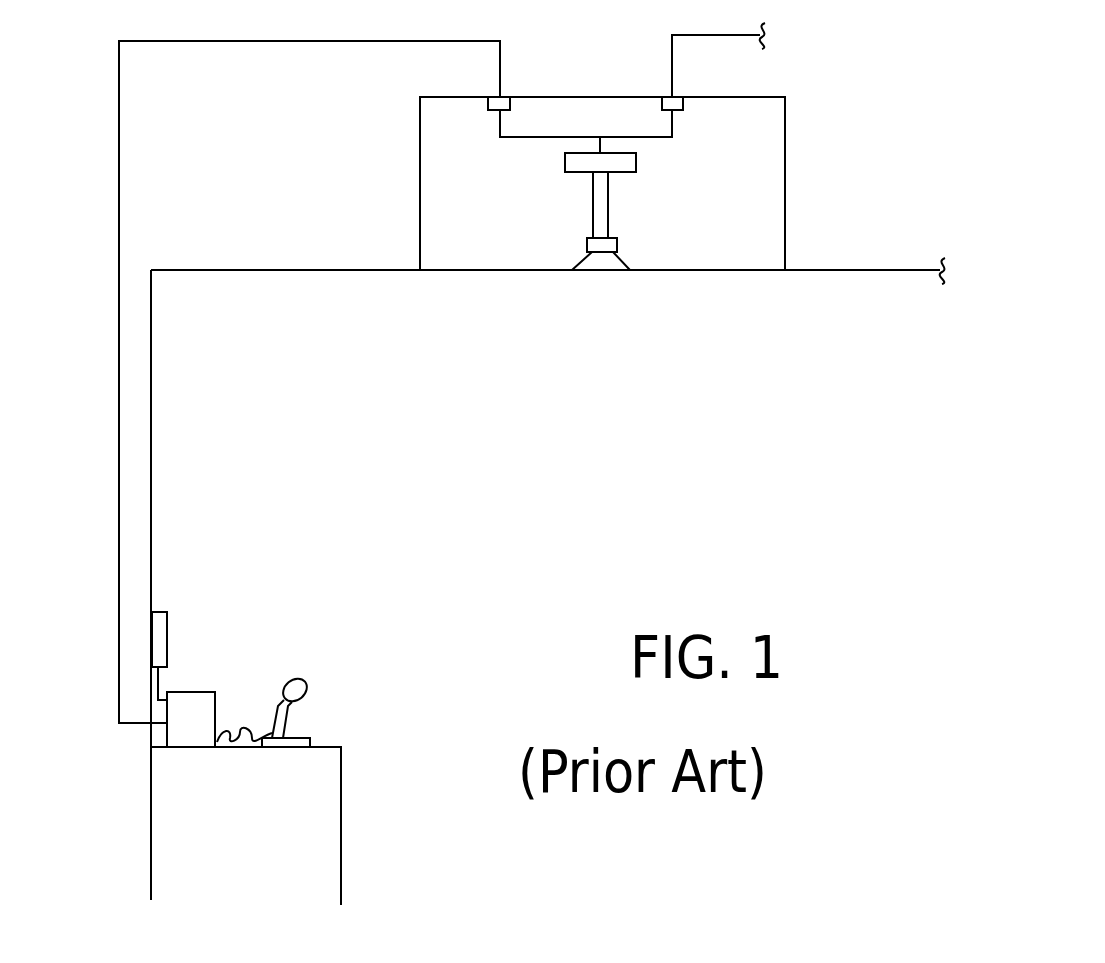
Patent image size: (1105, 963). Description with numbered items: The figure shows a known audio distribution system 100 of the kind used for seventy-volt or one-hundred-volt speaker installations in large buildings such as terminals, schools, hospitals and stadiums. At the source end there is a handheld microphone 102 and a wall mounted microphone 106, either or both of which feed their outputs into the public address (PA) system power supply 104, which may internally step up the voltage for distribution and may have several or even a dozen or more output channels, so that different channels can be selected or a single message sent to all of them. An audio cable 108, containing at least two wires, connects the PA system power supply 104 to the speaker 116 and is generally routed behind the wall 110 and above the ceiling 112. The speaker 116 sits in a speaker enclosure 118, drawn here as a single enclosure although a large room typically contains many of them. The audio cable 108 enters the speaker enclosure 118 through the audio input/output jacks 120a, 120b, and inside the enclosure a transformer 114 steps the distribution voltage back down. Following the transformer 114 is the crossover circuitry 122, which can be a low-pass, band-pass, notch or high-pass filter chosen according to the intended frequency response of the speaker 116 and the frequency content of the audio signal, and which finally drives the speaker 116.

The known audio distribution system 100 is at (778, 558).
The handheld microphone 102 is at (296, 727).
The public address (PA) system power supply 104 is at (157, 731).
The wall mounted microphone 106 is at (167, 630).
The audio cable 108 is at (104, 571).
The wall 110 is at (151, 450).
The ceiling 112 is at (191, 270).
The transformer 114 is at (636, 160).
The speaker 116 is at (625, 262).
The speaker enclosure 118 is at (420, 211).
The audio input/output jack 120a is at (488, 110).
The audio input/output jack 120b is at (683, 103).
The crossover circuitry 122 is at (587, 245).